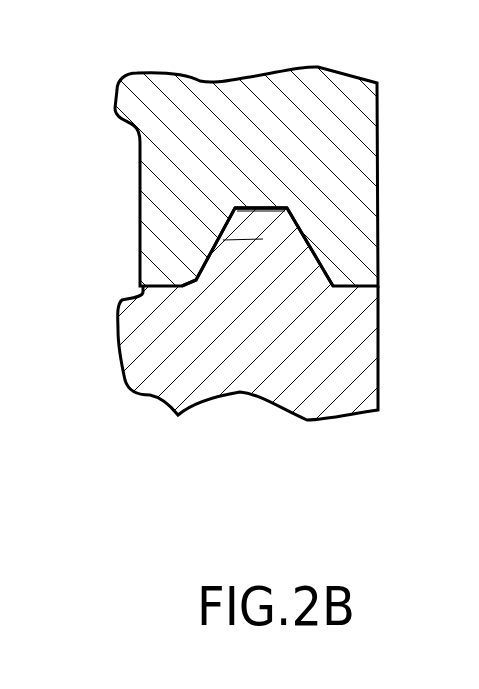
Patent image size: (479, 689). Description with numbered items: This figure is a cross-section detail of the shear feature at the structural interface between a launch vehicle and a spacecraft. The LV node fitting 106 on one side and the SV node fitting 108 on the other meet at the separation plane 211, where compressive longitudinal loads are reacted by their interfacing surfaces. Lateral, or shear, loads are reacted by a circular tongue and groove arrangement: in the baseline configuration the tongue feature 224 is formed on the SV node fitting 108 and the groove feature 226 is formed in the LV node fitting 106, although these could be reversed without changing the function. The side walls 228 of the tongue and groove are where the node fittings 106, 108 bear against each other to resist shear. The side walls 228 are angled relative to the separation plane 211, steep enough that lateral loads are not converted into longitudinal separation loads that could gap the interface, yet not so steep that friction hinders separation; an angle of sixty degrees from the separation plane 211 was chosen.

The LV node fitting 106 is at (362, 102).
The SV node fitting 108 is at (322, 402).
The tongue feature 224 is at (258, 255).
The groove feature 226 is at (252, 208).
The side walls 228 is at (311, 248).
The separation plane 211 is at (97, 286).